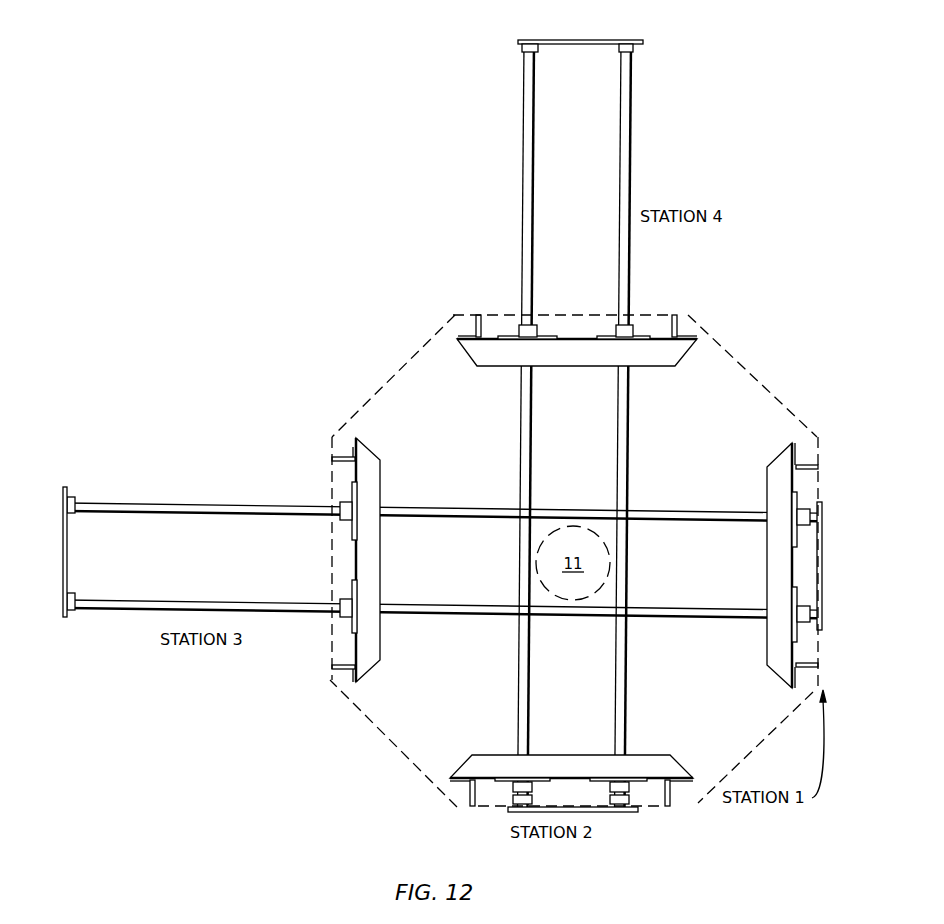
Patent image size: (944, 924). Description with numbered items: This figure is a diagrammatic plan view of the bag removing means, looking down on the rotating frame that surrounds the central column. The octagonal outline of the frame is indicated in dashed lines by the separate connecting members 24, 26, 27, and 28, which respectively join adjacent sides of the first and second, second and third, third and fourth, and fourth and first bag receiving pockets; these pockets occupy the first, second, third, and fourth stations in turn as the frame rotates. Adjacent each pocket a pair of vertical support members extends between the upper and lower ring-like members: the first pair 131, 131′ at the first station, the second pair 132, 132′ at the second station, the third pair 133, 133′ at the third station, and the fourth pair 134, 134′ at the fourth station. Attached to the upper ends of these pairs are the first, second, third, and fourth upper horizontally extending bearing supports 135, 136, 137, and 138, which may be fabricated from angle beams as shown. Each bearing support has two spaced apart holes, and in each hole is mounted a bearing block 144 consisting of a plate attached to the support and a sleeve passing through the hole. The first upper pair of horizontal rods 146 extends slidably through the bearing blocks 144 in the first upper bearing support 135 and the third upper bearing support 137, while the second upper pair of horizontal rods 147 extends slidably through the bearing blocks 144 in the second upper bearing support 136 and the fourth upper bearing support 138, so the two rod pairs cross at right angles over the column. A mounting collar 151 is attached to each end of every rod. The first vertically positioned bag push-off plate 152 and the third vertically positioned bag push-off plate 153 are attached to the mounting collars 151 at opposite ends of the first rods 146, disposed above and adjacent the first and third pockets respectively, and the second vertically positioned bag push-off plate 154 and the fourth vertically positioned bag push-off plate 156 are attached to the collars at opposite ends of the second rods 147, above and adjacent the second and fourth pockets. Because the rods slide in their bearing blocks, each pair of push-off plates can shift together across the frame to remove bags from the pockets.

The connecting member 24 is at (770, 735).
The connecting member 26 is at (368, 721).
The connecting member 27 is at (394, 378).
The connecting member 28 is at (757, 380).
The vertical support member 131 is at (797, 445).
The vertical support member 131′ is at (797, 688).
The vertical support member 132 is at (670, 795).
The vertical support member 132′ is at (467, 790).
The vertical support member 133 is at (345, 668).
The vertical support member 133′ is at (345, 452).
The vertical support member 134 is at (472, 318).
The vertical support member 134′ is at (676, 325).
The first upper horizontally extending bearing support 135 is at (765, 648).
The second upper horizontally extending bearing support 136 is at (648, 756).
The third upper horizontally extending bearing support 137 is at (385, 632).
The fourth upper horizontally extending bearing support 138 is at (660, 368).
The bearing block 144 is at (617, 330).
The first upper pair of horizontal rods 146 is at (727, 523).
The second upper pair of horizontal rods 147 is at (617, 430).
The mounting collar 151 is at (636, 50).
The first vertically positioned bag push-off plate 152 is at (820, 628).
The third vertically positioned bag push-off plate 153 is at (62, 490).
The second vertically positioned bag push-off plate 154 is at (630, 811).
The fourth vertically positioned bag push-off plate 156 is at (615, 42).